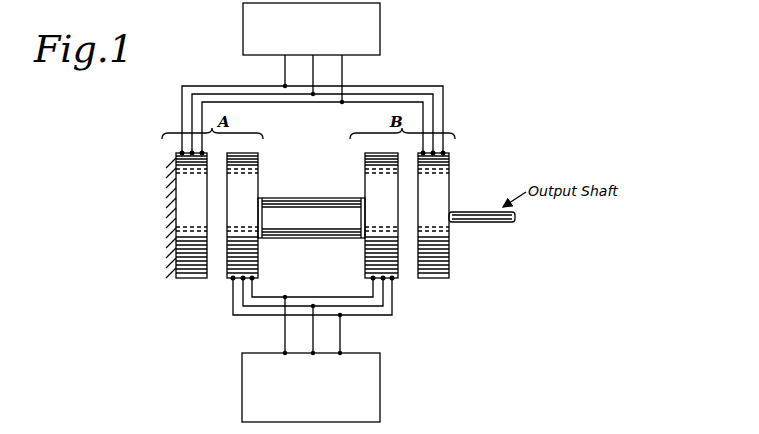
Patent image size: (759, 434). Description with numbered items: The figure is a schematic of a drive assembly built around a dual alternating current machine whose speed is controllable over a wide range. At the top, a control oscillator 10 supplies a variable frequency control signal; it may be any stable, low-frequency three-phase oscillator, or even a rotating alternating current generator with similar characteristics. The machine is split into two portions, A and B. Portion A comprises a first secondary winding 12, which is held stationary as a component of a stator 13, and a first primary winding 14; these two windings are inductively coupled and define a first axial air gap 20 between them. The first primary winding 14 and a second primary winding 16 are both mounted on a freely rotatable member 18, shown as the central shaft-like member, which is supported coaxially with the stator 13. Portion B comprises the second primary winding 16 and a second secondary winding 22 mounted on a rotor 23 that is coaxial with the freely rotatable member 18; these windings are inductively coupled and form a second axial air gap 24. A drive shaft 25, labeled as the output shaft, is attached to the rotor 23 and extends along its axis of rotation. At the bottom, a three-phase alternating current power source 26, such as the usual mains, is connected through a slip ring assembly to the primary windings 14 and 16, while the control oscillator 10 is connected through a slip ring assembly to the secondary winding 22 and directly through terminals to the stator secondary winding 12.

The control oscillator 10 is at (381, 14).
The first secondary winding 12 is at (192, 257).
The stator 13 is at (203, 221).
The first primary winding 14 is at (256, 153).
The second primary winding 16 is at (367, 153).
The freely rotatable member 18 is at (311, 218).
The first axial air gap 20 is at (217, 272).
The second secondary winding 22 is at (446, 184).
The rotor 23 is at (444, 221).
The second axial air gap 24 is at (408, 281).
The drive shaft 25 is at (466, 222).
The three-phase alternating current power source 26 is at (381, 393).